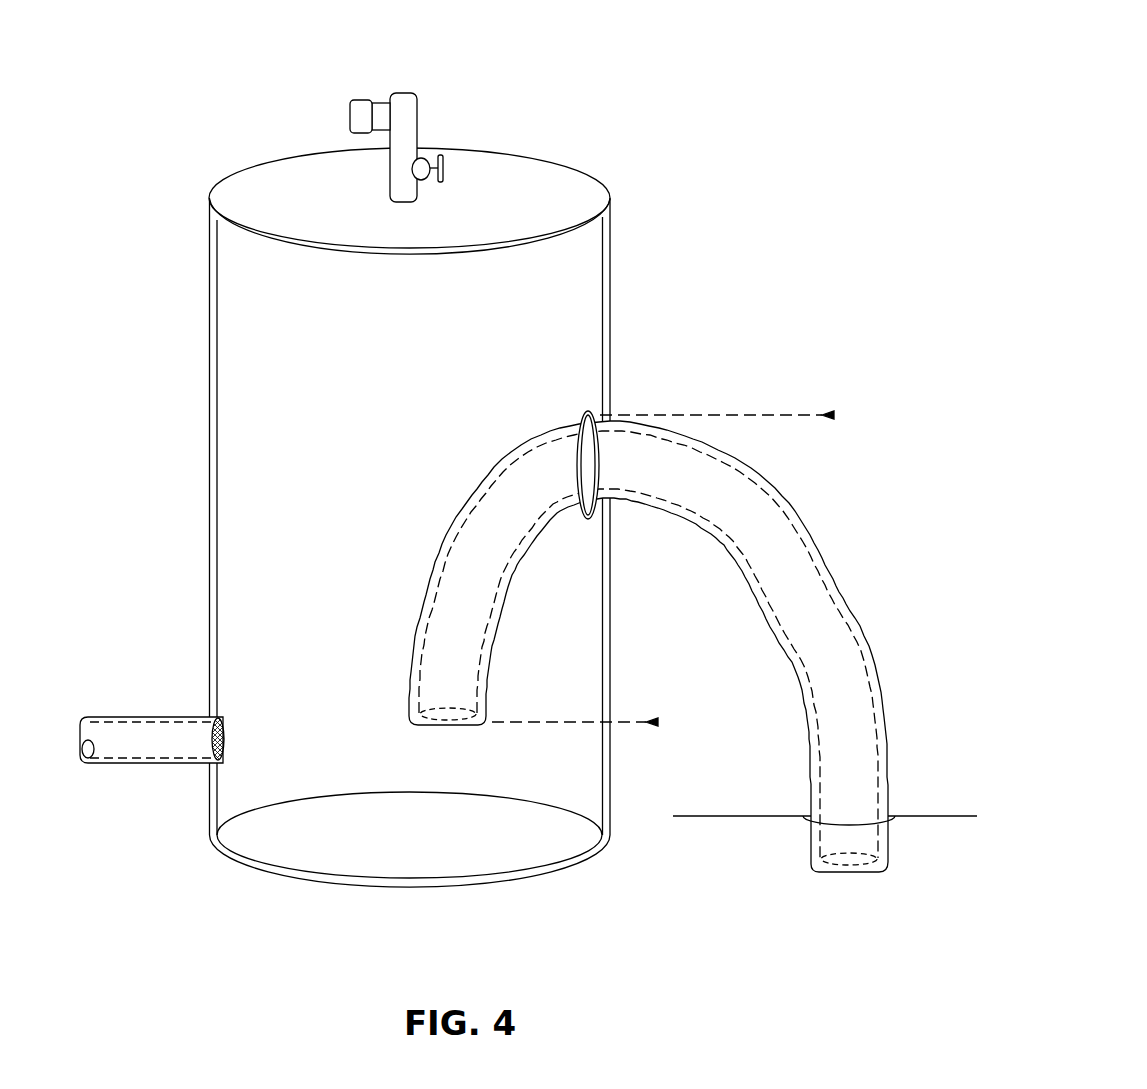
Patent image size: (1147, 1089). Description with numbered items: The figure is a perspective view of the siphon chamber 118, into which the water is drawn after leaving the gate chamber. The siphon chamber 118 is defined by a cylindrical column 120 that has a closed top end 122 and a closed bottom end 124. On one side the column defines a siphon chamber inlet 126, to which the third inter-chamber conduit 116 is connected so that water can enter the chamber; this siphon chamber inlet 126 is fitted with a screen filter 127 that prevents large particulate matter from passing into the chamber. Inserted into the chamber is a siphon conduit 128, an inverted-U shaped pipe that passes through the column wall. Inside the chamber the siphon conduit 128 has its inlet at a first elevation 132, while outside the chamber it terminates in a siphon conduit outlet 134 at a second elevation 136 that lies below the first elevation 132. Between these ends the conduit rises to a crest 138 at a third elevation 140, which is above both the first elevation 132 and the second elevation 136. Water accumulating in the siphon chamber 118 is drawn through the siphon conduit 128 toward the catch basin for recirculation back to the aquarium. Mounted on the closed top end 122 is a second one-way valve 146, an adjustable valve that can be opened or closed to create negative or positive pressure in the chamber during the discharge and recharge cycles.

The third inter-chamber conduit 116 is at (149, 772).
The siphon chamber 118 is at (505, 80).
The cylindrical column 120 is at (610, 243).
The closed top end 122 is at (557, 172).
The closed bottom end 124 is at (528, 868).
The siphon chamber inlet 126 is at (207, 737).
The screen filter 127 is at (212, 752).
The siphon conduit 128 is at (646, 687).
The first elevation 132 is at (658, 722).
The siphon conduit outlet 134 is at (848, 874).
The second elevation 136 is at (435, 726).
The crest 138 is at (600, 410).
The third elevation 140 is at (834, 415).
The second one-way valve 146 is at (380, 100).